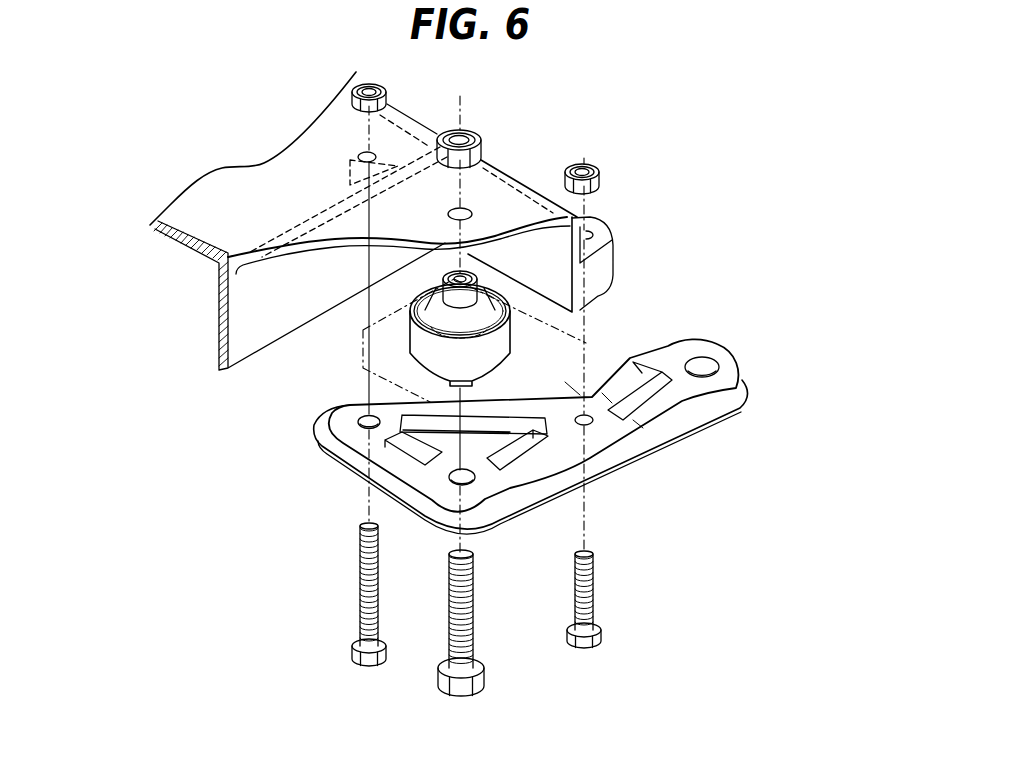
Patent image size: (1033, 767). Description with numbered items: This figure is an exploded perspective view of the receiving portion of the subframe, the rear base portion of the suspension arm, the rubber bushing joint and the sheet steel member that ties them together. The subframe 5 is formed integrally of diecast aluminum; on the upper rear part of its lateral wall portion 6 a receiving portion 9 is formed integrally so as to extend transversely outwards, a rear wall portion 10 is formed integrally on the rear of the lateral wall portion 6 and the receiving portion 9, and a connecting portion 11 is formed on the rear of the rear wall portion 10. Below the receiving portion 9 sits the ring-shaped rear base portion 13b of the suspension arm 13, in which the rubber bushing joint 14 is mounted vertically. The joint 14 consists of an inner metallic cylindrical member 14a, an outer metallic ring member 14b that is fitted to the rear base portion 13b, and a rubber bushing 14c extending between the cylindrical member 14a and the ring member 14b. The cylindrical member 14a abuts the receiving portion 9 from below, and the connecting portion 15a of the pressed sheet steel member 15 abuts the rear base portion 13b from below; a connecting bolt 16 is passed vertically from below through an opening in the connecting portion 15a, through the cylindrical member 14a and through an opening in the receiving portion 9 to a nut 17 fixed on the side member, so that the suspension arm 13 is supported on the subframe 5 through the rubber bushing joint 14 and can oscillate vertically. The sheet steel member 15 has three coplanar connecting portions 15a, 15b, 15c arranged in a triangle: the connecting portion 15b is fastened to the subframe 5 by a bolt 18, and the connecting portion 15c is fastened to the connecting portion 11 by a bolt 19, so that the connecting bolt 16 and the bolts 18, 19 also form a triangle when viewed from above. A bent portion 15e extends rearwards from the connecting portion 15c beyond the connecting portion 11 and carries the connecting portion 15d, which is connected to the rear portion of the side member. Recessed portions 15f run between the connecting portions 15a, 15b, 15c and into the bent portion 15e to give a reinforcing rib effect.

The subframe 5 is at (208, 207).
The lateral wall portion 6 is at (218, 308).
The receiving portion 9 is at (316, 250).
The rear wall portion 10 is at (522, 180).
The connecting portion of the subframe 11 is at (610, 263).
The suspension arm 13 is at (431, 340).
The rear base portion 13b is at (363, 331).
The rubber bushing joint 14 is at (477, 291).
The inner metallic cylindrical member 14a is at (471, 278).
The outer metallic ring member 14b is at (487, 353).
The rubber bushing 14c is at (500, 308).
The sheet steel member 15 is at (537, 438).
The connecting portion 15a is at (487, 478).
The connecting portion 15b is at (345, 407).
The connecting portion 15c is at (567, 433).
The connecting portion 15d is at (725, 366).
The bent portion 15e is at (653, 410).
The recessed portion 15f is at (365, 443).
The connecting bolt 16 is at (486, 677).
The nut 17 is at (478, 135).
The bolt 18 is at (352, 650).
The bolt 19 is at (603, 634).